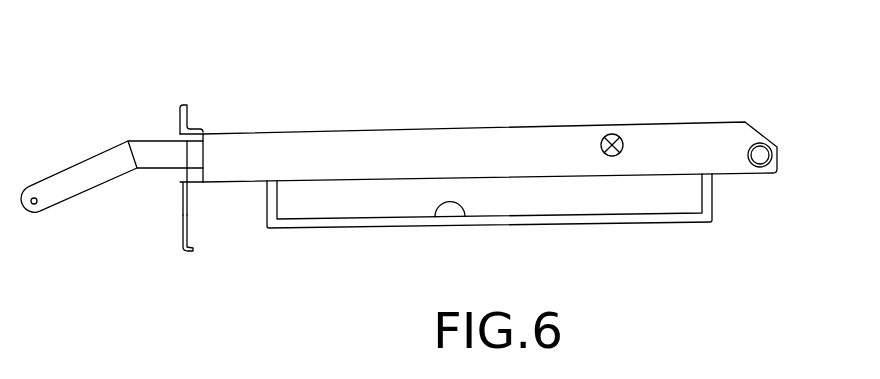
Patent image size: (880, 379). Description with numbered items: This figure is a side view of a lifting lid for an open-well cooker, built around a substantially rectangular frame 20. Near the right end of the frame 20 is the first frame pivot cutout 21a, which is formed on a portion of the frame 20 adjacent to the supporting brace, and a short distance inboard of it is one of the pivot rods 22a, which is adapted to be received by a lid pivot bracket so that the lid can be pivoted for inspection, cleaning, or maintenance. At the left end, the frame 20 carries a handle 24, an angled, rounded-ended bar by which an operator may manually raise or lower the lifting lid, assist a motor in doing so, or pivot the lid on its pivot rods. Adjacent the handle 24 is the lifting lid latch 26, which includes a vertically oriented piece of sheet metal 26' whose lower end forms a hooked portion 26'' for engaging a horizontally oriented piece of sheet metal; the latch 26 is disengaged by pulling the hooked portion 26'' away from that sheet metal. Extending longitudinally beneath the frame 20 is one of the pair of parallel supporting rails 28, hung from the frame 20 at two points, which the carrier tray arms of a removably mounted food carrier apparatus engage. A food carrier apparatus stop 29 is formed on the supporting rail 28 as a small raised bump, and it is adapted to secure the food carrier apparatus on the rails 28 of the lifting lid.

The frame 20 is at (403, 128).
The first frame pivot cutout 21a is at (758, 135).
The pivot rod 22a is at (622, 138).
The handle 24 is at (63, 203).
The lifting lid latch 26 is at (153, 114).
The vertically oriented piece of sheet metal 26' is at (144, 214).
The hooked portion 26'' is at (194, 271).
The supporting rail 28 is at (573, 225).
The food carrier apparatus stop 29 is at (450, 210).